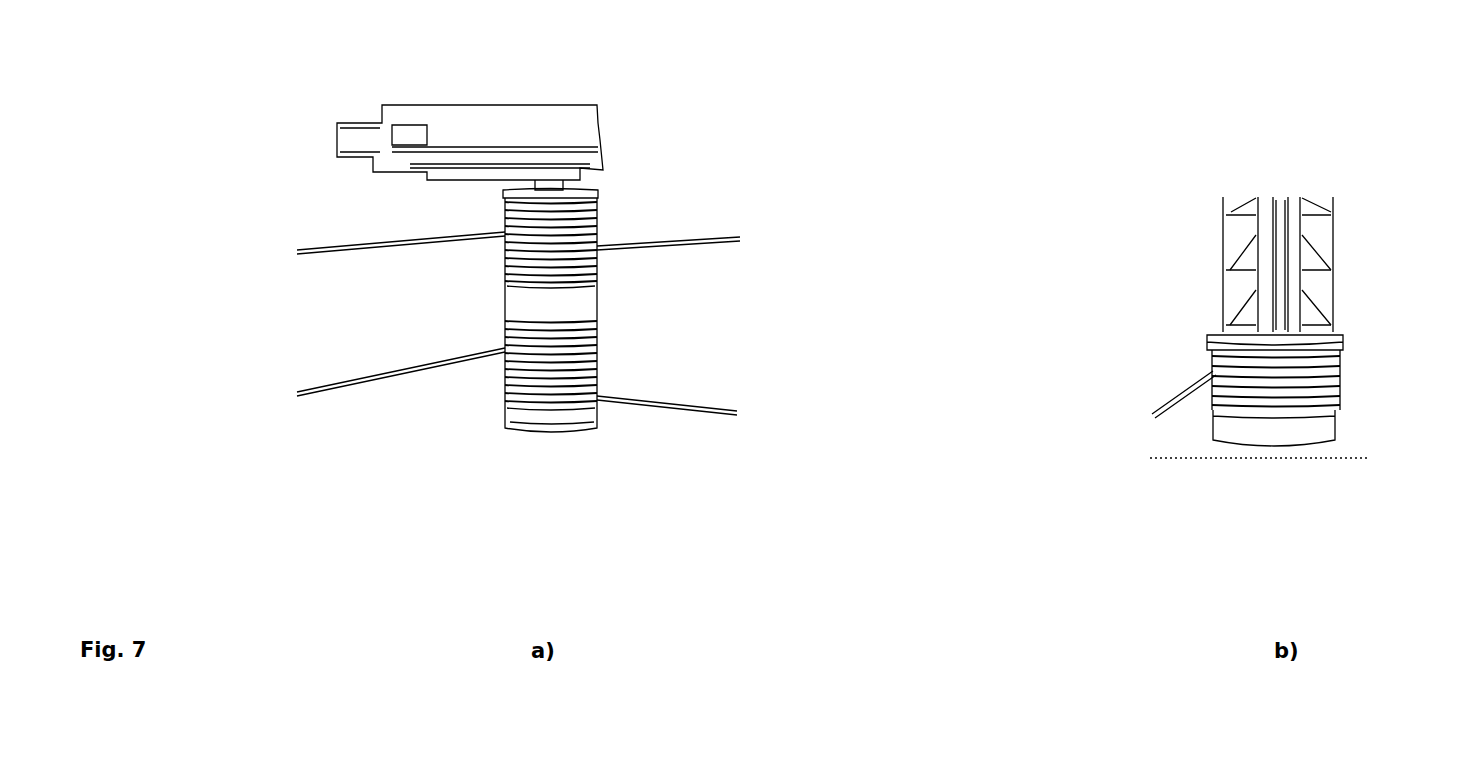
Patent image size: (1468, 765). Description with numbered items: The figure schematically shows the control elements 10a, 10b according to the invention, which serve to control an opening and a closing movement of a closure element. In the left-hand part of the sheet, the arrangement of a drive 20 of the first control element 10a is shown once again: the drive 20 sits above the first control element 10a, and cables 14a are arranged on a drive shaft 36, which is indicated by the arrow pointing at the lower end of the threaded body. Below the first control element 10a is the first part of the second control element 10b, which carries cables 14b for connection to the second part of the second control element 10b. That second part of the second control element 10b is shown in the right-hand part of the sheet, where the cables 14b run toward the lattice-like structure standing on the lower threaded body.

The drive 20 is at (598, 118).
The first control element 10a is at (598, 207).
The second control element 10b is at (556, 463).
The cables 14a is at (378, 252).
The cables 14b is at (357, 382).
The drive shaft 36 is at (979, 372).